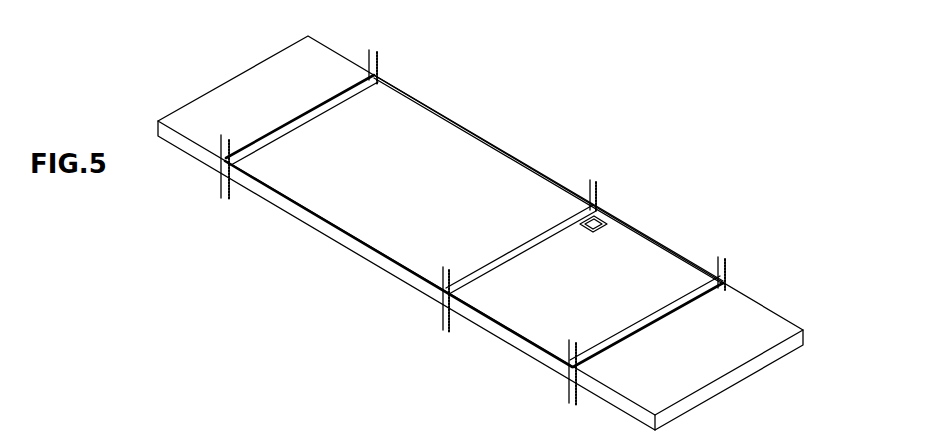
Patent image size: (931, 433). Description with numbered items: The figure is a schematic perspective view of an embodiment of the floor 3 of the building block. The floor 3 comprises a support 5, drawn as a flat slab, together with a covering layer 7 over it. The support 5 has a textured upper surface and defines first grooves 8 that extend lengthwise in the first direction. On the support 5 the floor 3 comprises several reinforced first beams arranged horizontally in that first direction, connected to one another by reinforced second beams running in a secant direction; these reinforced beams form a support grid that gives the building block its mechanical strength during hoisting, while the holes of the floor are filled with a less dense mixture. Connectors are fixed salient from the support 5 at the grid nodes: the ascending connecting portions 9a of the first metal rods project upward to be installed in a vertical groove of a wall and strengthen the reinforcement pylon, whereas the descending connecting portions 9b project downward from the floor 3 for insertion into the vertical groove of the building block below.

The floor 3 is at (525, 118).
The support 5 is at (292, 254).
The covering layer 7 is at (319, 113).
The first grooves 8 is at (586, 343).
The ascending connecting portion 9a is at (595, 197).
The descending connecting portion 9b is at (220, 178).